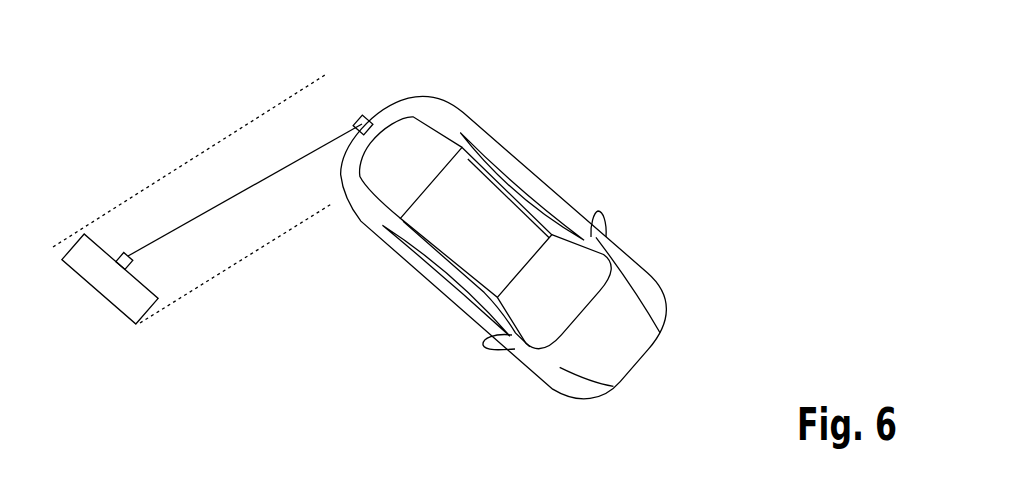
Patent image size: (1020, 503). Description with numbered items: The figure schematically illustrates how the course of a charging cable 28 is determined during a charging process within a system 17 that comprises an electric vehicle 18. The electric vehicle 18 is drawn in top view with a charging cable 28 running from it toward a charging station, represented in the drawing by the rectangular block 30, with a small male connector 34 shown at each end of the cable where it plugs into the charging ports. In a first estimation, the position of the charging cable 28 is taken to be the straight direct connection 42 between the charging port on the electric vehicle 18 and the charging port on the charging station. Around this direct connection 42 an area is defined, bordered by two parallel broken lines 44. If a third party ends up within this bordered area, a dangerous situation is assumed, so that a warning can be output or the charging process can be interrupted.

The system 17 is at (665, 117).
The electric vehicle 18 is at (541, 185).
The charging cable 28 is at (353, 115).
The target object 30 is at (83, 280).
The male connector 34 is at (366, 113).
The direct connection 42 is at (350, 112).
The parallel broken lines 44 is at (218, 142).